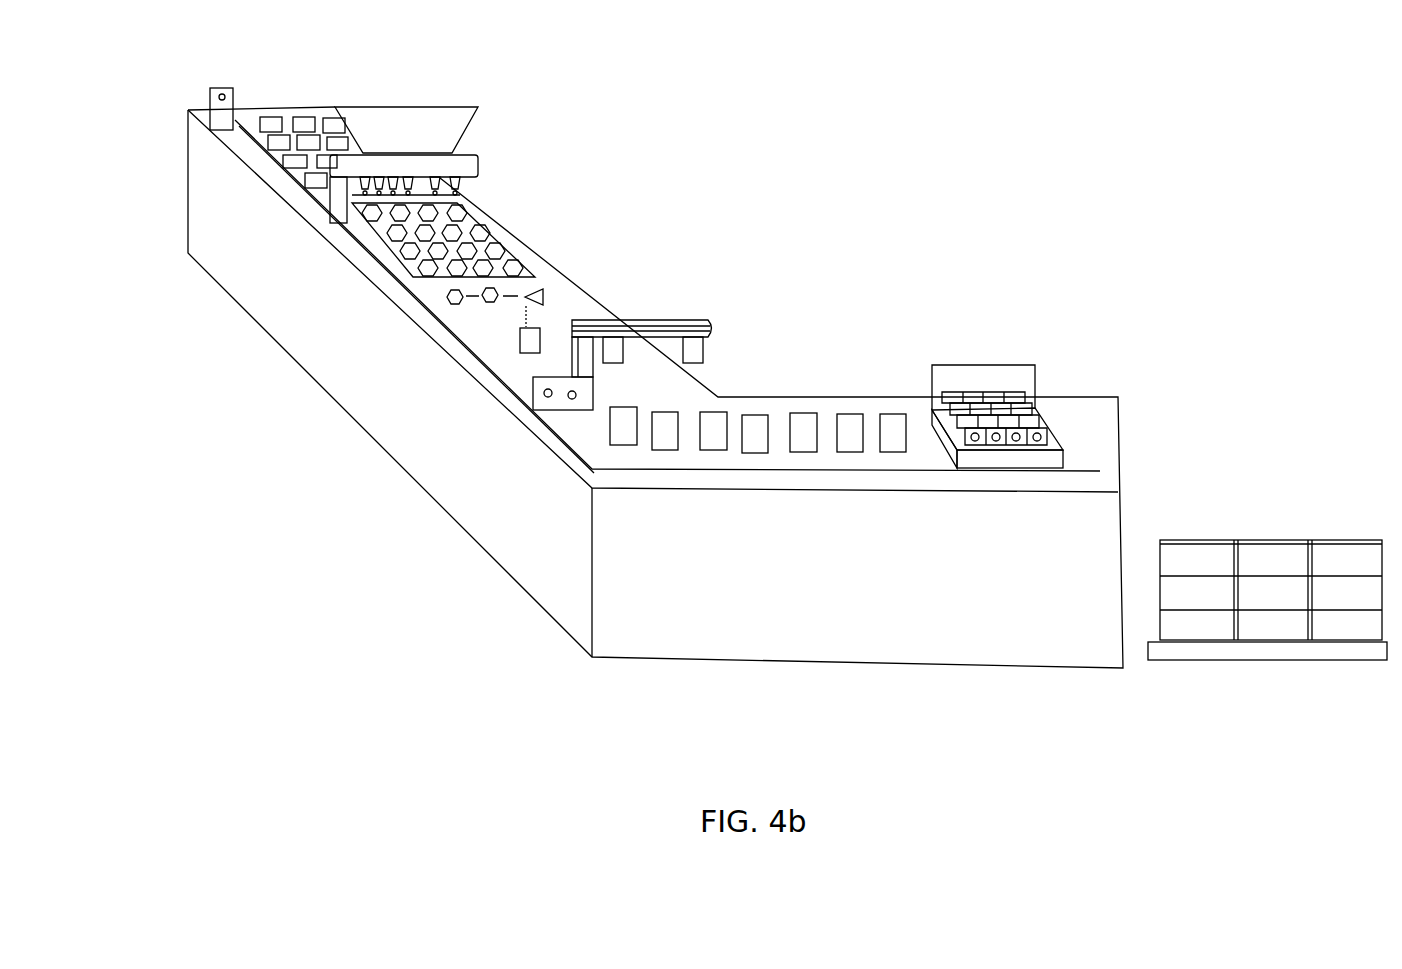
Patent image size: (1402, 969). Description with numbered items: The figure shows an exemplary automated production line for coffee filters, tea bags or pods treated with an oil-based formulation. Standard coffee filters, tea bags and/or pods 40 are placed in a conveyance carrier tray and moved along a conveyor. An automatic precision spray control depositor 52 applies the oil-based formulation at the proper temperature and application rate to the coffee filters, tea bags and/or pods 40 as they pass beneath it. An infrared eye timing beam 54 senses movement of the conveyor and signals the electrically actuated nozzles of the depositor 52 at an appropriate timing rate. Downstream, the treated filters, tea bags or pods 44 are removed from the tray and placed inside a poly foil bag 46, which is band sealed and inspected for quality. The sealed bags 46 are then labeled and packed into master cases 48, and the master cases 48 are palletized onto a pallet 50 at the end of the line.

The coffee filters, tea bags and/or pods 40 is at (277, 157).
The treated filters, tea bags or pods 44 is at (432, 300).
The poly foil bag 46 is at (517, 345).
The master cases 48 is at (987, 458).
The pallet 50 is at (1277, 517).
The automatic precision spray control depositor 52 is at (393, 107).
The infrared eye timing beam 54 is at (212, 122).